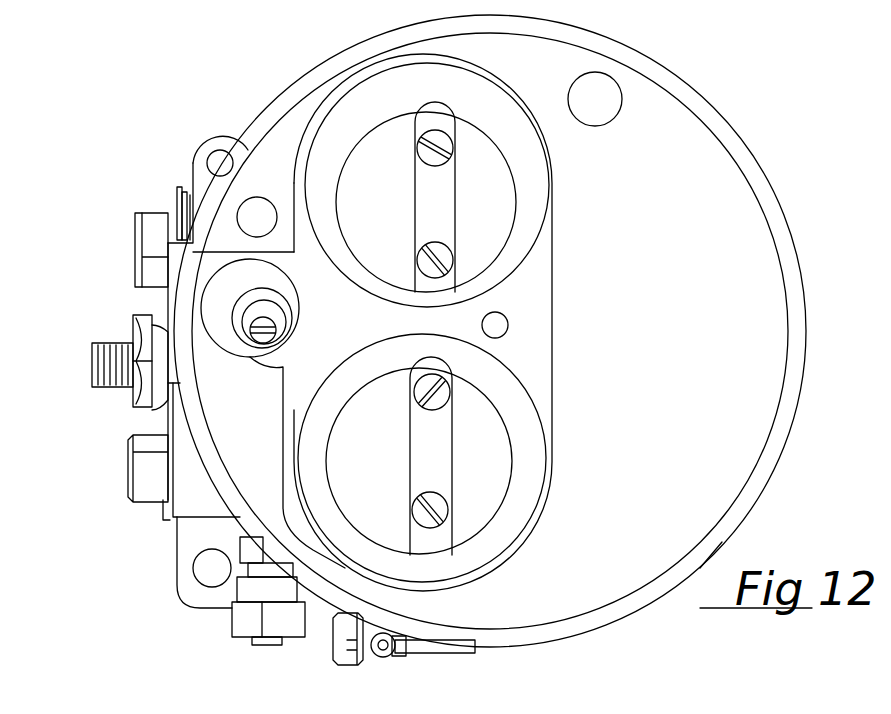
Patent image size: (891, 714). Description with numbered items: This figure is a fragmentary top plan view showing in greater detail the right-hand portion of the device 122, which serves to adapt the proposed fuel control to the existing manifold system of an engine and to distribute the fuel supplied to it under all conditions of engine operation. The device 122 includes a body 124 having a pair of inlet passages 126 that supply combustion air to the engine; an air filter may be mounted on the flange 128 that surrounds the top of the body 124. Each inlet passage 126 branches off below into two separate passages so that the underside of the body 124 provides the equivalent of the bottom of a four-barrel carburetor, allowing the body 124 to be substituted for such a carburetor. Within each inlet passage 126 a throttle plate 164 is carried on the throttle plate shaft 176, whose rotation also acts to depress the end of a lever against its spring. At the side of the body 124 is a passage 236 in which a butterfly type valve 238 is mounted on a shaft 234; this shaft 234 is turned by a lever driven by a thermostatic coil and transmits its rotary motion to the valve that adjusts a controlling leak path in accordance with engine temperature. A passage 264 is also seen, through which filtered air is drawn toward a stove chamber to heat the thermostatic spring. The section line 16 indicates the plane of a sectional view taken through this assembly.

The section line 16- 16 is at (94, 243).
The device 122 is at (792, 227).
The body 124 is at (722, 185).
The inlet passage 126 is at (522, 191).
The flange 128 is at (768, 198).
The throttle plate 164 is at (468, 398).
The throttle plate shaft 176 is at (422, 472).
The shaft 234 is at (282, 337).
The passage 236 is at (233, 302).
The butterfly type valve 238 is at (265, 323).
The passage 264 is at (257, 197).